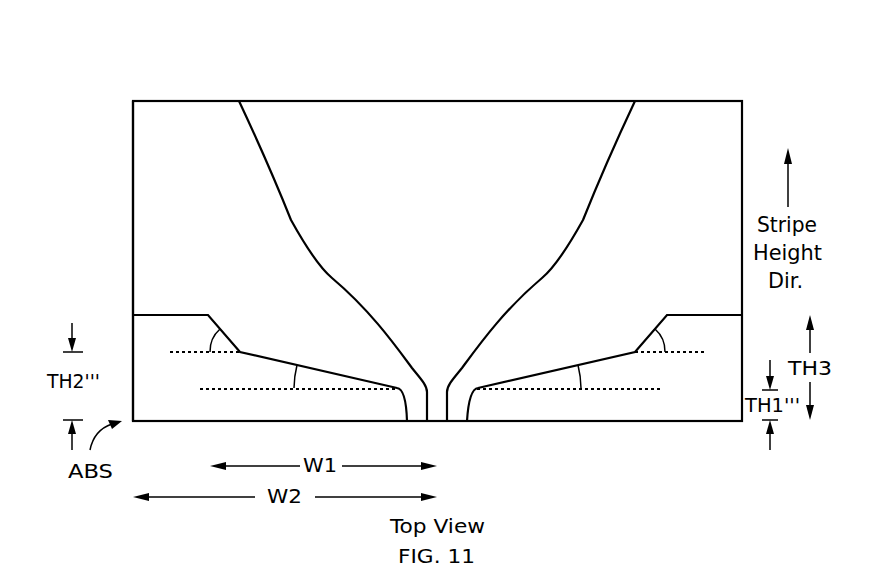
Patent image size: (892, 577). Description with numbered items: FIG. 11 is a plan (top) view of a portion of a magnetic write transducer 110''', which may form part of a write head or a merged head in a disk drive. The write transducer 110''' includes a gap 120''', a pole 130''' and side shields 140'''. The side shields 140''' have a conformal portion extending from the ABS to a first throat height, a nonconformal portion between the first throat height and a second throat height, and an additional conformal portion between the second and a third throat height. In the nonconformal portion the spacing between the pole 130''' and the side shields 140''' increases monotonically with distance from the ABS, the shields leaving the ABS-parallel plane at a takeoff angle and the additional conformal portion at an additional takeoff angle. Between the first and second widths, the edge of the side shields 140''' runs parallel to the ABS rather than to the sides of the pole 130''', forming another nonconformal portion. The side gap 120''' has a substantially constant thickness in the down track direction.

The magnetic write transducer 110''' is at (437, 223).
The side gap 120''' is at (105, 261).
The pole 130''' is at (437, 239).
The side shields 140''' is at (437, 389).